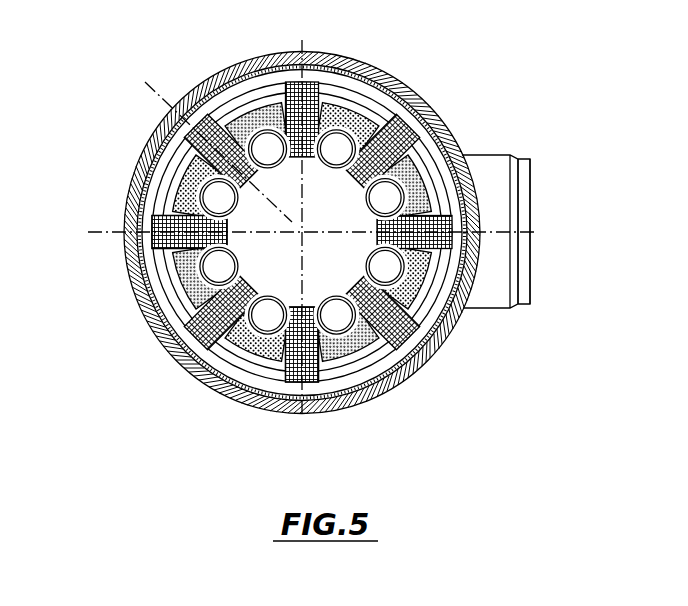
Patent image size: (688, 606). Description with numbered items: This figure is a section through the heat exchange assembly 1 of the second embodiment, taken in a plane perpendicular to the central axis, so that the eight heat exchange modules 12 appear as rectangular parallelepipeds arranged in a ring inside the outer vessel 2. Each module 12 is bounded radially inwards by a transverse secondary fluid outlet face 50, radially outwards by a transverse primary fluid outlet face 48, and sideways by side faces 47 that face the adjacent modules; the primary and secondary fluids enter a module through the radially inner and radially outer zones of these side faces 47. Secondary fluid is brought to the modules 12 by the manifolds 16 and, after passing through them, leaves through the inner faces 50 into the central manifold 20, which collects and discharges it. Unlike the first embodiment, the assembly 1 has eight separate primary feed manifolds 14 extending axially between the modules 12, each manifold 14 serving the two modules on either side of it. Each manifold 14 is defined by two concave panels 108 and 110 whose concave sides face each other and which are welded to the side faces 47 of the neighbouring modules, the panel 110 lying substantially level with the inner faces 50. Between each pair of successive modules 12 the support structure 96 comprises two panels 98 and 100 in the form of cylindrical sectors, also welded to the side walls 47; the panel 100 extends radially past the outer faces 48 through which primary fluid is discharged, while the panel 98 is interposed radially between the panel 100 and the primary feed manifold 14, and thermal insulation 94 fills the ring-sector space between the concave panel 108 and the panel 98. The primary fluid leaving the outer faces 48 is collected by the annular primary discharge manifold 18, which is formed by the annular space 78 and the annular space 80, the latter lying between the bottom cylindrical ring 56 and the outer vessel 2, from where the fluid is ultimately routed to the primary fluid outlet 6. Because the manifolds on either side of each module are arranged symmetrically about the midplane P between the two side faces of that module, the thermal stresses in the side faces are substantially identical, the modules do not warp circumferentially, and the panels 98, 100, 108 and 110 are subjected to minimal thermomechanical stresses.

The assembly 1 is at (122, 82).
The outer vessel 2 is at (141, 331).
The outlet for primary fluid 6 is at (498, 298).
The heat exchange module 12 is at (262, 353).
The primary feed manifold 14 is at (347, 130).
The manifold for feeding secondary fluid 16 is at (242, 102).
The annular manifold for collecting and discharging primary fluid 18 is at (438, 348).
The central manifold 20 is at (312, 229).
The side face 47 is at (367, 275).
The transverse primary fluid outlet face 48 is at (300, 383).
The transverse secondary fluid outlet face 50 is at (300, 306).
The bottom cylindrical ring 56 is at (470, 180).
The annular space 78 is at (388, 365).
The annular space 80 is at (327, 400).
The thermal insulation 94 is at (428, 268).
The support structure 96 is at (142, 170).
The panel 98 is at (425, 138).
The panel 100 is at (450, 130).
The concave panel 108 is at (197, 197).
The concave panel 110 is at (175, 217).
The midplane P is at (290, 218).